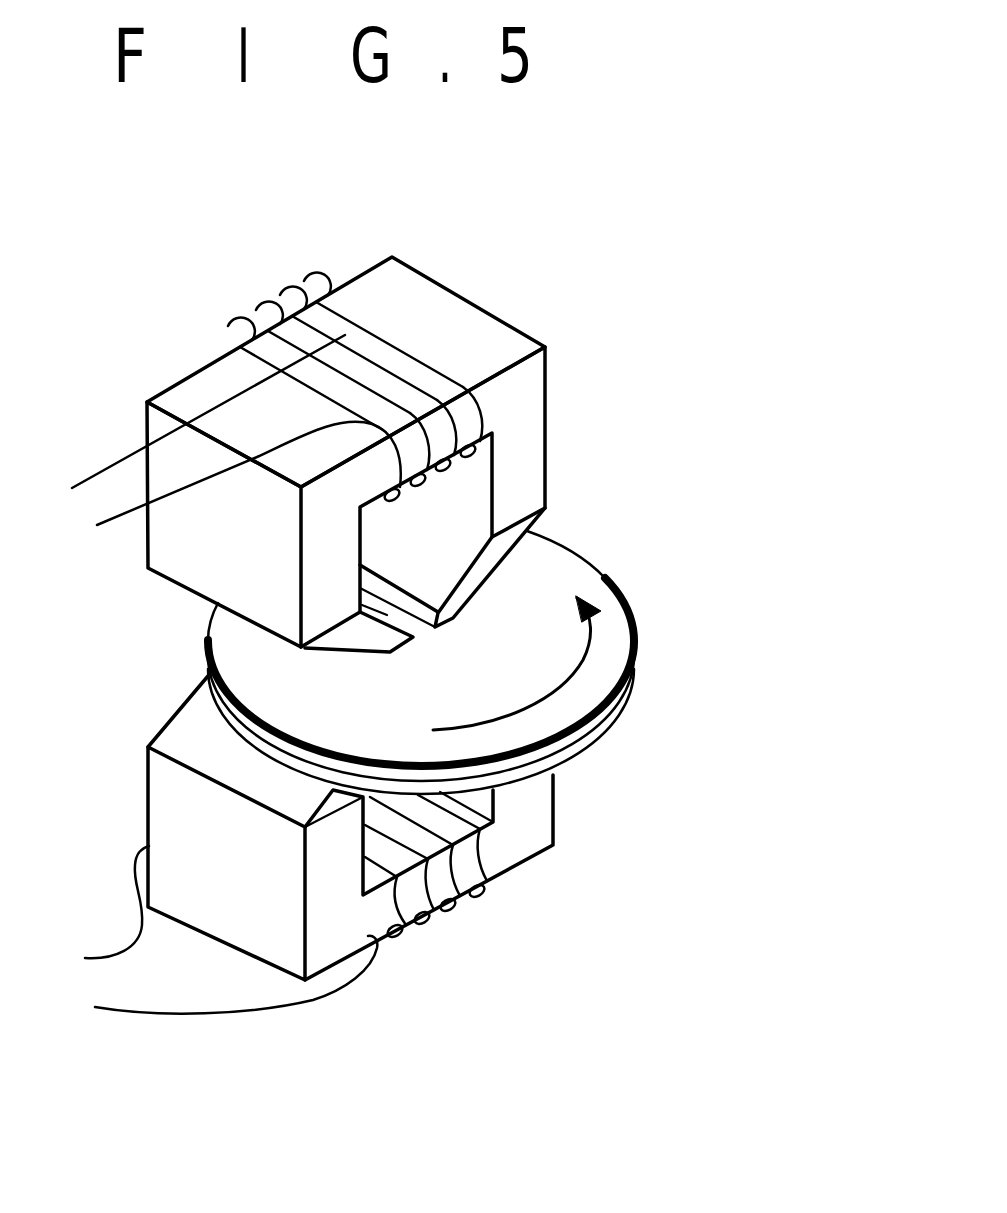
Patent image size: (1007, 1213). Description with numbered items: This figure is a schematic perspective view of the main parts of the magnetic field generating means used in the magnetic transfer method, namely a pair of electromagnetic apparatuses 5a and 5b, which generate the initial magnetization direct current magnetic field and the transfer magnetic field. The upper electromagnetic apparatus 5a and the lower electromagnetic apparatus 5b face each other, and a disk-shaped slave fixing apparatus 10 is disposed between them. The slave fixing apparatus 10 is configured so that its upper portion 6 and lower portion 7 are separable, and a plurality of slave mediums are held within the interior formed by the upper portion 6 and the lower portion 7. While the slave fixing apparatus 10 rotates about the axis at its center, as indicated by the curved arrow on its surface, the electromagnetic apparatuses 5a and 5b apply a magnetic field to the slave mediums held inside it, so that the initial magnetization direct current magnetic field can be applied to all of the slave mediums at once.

The electromagnetic apparatus 5a is at (473, 312).
The electromagnetic apparatus 5b is at (531, 846).
The upper portion 6 is at (612, 668).
The lower portion 7 is at (598, 742).
The slave fixing apparatus 10 is at (524, 664).